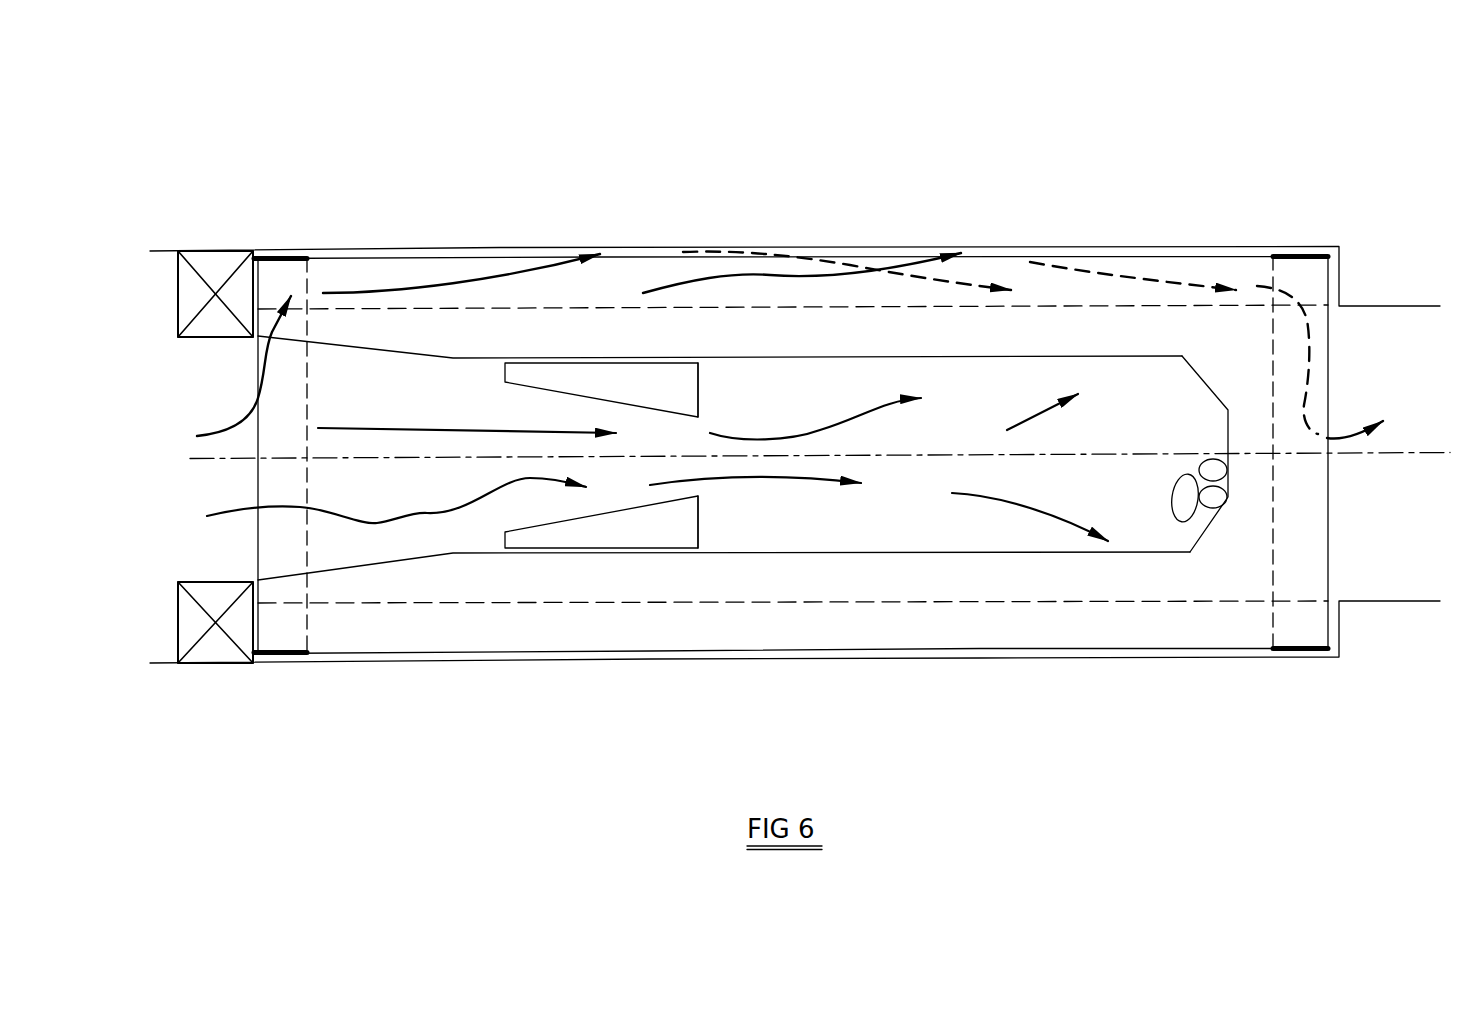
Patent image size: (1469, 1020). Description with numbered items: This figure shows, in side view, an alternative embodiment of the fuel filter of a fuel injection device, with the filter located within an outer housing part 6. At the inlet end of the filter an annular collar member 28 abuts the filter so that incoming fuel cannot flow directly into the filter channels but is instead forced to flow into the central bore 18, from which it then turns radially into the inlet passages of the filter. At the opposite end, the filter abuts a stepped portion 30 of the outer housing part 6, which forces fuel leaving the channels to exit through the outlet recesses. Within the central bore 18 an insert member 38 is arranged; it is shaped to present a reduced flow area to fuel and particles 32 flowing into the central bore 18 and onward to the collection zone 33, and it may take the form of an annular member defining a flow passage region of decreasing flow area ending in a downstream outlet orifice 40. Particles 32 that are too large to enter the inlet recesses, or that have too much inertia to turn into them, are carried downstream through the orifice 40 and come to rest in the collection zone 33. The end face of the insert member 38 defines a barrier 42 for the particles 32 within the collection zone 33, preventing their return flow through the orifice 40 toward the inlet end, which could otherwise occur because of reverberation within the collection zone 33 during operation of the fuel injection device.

The outer housing part 6 is at (768, 653).
The central bore 18 is at (1066, 351).
The annular collar member 28 is at (210, 249).
The stepped portion 30 is at (1354, 276).
The particles 32 is at (1184, 504).
The collection zone 33 is at (1154, 385).
The insert member 38 is at (623, 380).
The outlet orifice 40 is at (639, 446).
The barrier 42 is at (702, 392).